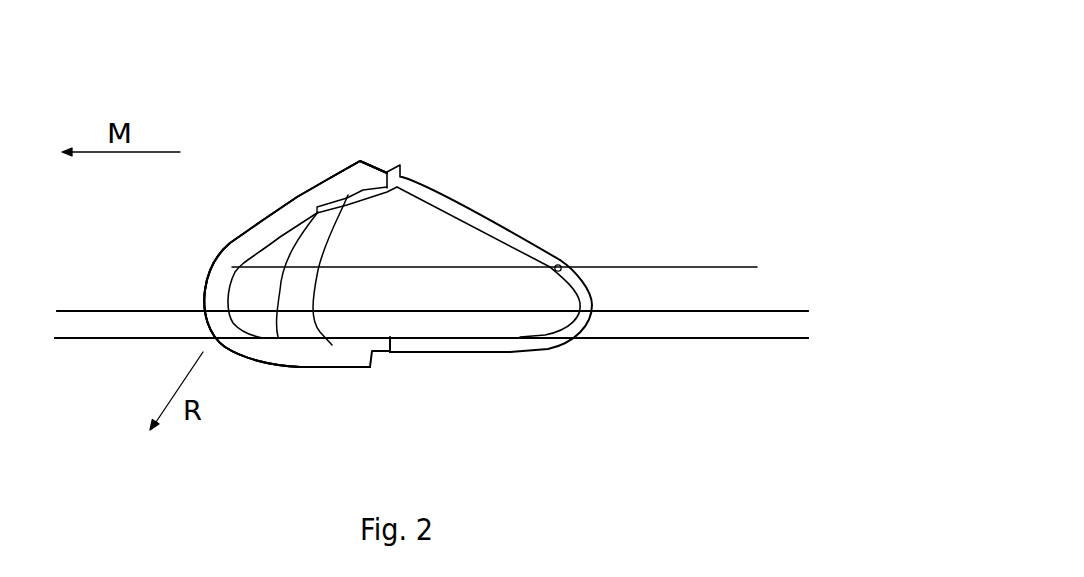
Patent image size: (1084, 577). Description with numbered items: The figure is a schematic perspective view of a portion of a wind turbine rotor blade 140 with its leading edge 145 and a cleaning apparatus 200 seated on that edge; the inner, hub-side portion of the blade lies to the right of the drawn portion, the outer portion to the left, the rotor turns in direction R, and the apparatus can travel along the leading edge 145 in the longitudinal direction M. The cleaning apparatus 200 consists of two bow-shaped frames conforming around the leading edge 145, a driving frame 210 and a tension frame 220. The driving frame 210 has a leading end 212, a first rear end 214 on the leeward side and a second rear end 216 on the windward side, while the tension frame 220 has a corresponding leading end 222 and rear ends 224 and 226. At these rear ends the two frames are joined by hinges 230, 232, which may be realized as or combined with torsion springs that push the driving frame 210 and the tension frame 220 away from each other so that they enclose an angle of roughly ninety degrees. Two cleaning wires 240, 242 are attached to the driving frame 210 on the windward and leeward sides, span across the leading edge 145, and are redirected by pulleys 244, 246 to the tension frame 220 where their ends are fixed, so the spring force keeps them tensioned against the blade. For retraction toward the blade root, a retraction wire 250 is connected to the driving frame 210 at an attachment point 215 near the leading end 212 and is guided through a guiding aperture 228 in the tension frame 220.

The cleaning apparatus 200 is at (513, 74).
The rotor blade 140 is at (672, 153).
The leading edge 145 is at (672, 310).
The driving frame 210 is at (278, 208).
The leading end of the driving frame 212 is at (222, 285).
The first rear end of the driving frame 214 is at (369, 160).
The attachment point 215 is at (231, 270).
The second rear end of the driving frame 216 is at (357, 357).
The tension frame 220 is at (508, 343).
The leading end of the tension frame 222 is at (582, 338).
The first rear end of the tension frame 224 is at (402, 174).
The second rear end of the tension frame 226 is at (402, 354).
The guiding aperture 228 is at (560, 264).
The hinge 230 is at (392, 168).
The hinge 232 is at (383, 352).
The cleaning wire 240 is at (305, 340).
The cleaning wire 242 is at (265, 340).
The pulley 244 is at (314, 205).
The pulley 246 is at (348, 195).
The retraction wire 250 is at (738, 266).